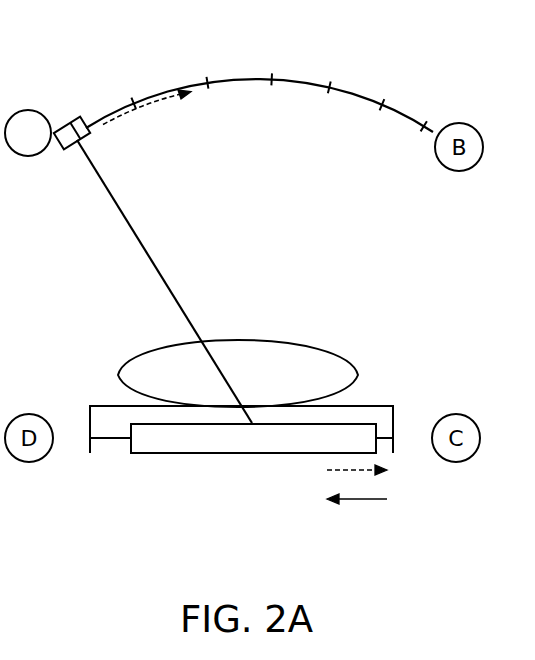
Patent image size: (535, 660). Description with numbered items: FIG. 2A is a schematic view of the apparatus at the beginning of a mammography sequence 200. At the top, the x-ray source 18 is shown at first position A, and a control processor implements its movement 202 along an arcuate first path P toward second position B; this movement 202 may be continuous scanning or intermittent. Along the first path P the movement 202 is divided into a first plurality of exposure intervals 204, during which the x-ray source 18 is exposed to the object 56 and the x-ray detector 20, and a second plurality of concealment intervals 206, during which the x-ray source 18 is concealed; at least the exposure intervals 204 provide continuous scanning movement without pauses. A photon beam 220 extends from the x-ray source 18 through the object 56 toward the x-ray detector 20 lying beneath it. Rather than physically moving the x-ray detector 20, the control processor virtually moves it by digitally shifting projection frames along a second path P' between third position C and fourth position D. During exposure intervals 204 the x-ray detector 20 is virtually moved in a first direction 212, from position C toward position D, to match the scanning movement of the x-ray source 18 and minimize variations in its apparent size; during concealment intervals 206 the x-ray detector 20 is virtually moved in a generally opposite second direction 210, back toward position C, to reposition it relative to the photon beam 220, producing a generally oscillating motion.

The x-ray source 18 is at (28, 158).
The x-ray detector 20 is at (372, 410).
The object 56 is at (240, 338).
The mammography sequence 200 is at (405, 283).
The movement 202 is at (117, 117).
The exposure intervals 204 is at (71, 116).
The concealment intervals 206 is at (152, 93).
The second direction 210 is at (327, 471).
The first direction 212 is at (360, 501).
The photon beam 220 is at (140, 238).
The first path P is at (301, 40).
The second path P' is at (120, 473).